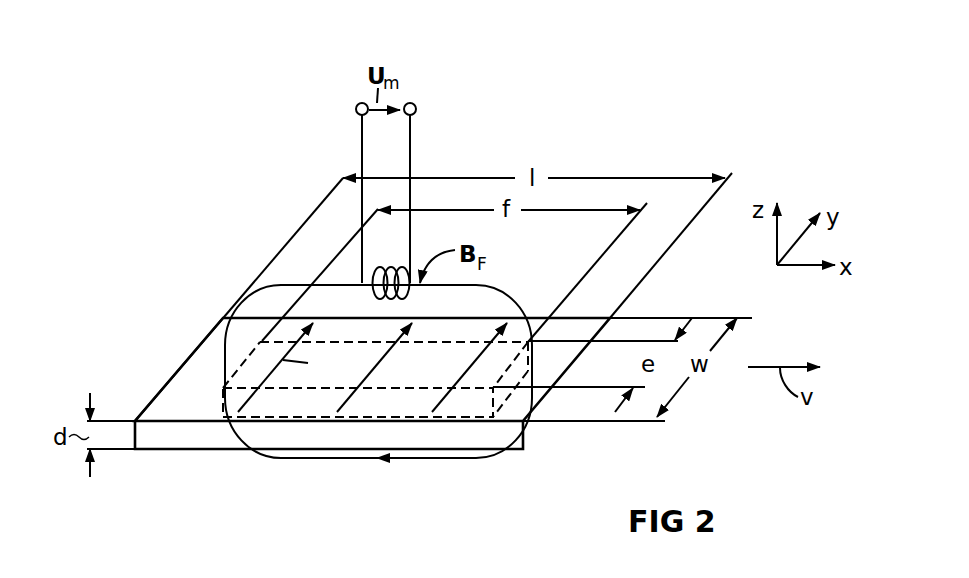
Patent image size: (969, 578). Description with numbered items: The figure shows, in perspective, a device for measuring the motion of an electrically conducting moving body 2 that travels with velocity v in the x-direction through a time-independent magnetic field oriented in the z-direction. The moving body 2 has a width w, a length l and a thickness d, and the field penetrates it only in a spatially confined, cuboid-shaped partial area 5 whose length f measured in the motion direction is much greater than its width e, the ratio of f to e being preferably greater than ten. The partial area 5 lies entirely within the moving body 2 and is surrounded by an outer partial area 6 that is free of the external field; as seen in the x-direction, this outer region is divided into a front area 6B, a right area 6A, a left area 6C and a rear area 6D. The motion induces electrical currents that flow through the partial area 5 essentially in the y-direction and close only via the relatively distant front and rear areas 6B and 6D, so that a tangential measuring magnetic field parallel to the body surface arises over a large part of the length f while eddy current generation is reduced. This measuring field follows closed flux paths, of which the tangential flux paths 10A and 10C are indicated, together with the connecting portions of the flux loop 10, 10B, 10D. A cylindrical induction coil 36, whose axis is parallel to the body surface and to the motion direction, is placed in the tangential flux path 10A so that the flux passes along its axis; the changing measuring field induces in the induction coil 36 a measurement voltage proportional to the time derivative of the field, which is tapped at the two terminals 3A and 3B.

The moving body 2 is at (187, 407).
The terminal 3A is at (356, 106).
The terminal 3B is at (416, 106).
The partial area 5 is at (450, 367).
The outer partial area 6 is at (417, 383).
The right area 6A is at (327, 412).
The front area 6B is at (613, 313).
The left area 6C is at (292, 327).
The rear area 6D is at (203, 370).
The conductor loop 10 is at (369, 358).
The tangential flux path 10A is at (300, 284).
The right section of conductor loop 10B is at (536, 418).
The tangential flux path 10C is at (427, 460).
The left section of conductor loop 10D is at (225, 352).
The induction coil 36 is at (388, 268).